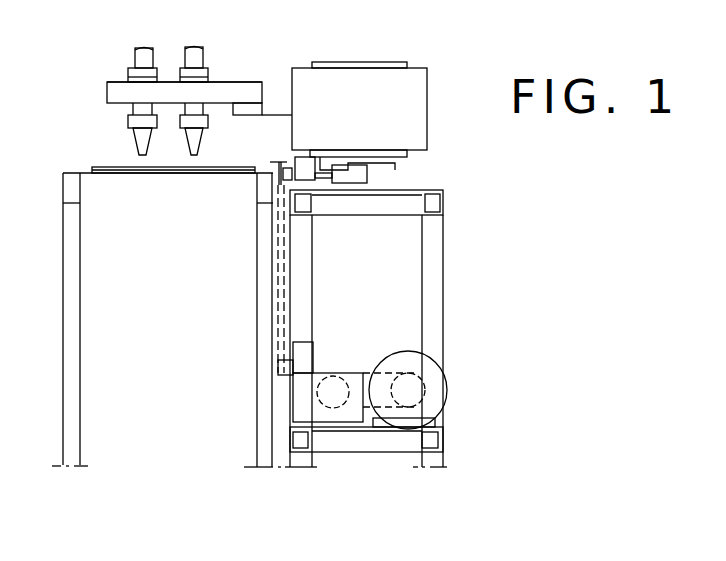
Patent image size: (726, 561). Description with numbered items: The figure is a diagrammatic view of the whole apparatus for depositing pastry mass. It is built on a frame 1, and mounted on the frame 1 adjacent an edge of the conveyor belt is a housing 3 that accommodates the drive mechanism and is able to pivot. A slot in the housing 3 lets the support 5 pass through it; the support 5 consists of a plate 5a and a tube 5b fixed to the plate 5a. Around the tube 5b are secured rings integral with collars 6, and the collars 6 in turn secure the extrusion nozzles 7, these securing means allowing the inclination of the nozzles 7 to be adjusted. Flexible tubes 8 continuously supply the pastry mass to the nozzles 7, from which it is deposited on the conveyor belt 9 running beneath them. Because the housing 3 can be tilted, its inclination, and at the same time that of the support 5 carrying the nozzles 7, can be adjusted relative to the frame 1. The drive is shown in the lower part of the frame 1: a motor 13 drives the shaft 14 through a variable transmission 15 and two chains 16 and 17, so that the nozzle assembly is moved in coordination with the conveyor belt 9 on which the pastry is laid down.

The frame 1 is at (433, 302).
The housing 3 is at (420, 132).
The support 5 is at (238, 120).
The plate 5a is at (263, 116).
The tube 5b is at (247, 82).
The collars 6 is at (178, 96).
The extrusion nozzles 7 is at (191, 119).
The flexible tubes 8 is at (190, 48).
The conveyor belt 9 is at (176, 168).
The motor 13 is at (447, 395).
The shaft 14 is at (278, 178).
The variable transmission 15 is at (312, 386).
The chain 16 is at (365, 373).
The chain 17 is at (277, 283).